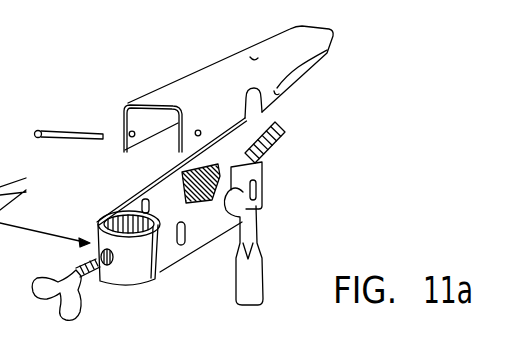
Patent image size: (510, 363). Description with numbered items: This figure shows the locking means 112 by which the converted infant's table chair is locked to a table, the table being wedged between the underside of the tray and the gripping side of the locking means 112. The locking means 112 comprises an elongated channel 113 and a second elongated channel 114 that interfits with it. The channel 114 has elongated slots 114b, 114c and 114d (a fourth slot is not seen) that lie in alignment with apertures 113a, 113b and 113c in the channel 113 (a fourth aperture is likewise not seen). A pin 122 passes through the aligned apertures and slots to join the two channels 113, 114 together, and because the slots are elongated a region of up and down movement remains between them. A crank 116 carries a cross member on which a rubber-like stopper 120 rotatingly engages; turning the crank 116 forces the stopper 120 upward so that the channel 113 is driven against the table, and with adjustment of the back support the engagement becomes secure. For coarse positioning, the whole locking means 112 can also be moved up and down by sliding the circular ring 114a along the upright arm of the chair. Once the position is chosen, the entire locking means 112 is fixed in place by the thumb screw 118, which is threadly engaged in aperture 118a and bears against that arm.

The locking means 112 is at (257, 164).
The elongated channel 113 is at (198, 92).
The aperture 113a is at (130, 136).
The aperture 113b is at (196, 135).
The aperture 113c is at (330, 53).
The second elongated channel 114 is at (193, 240).
The circular ring 114a is at (100, 216).
The elongated slot 114b is at (124, 208).
The elongated slot 114c is at (187, 236).
The elongated slot 114d is at (256, 192).
The crank 116 is at (248, 233).
The thumb screw 118 is at (88, 306).
The aperture 118a is at (113, 268).
The rubber-like stopper 120 is at (279, 122).
The pin 122 is at (62, 133).